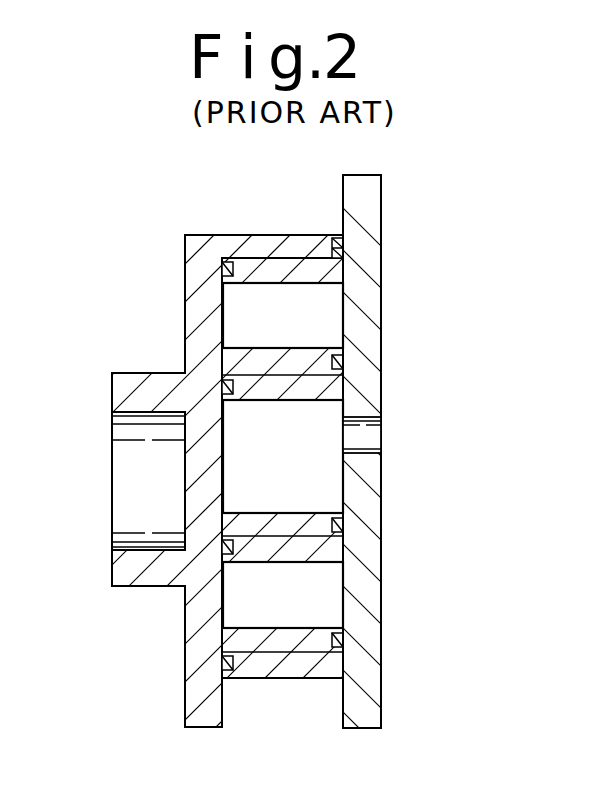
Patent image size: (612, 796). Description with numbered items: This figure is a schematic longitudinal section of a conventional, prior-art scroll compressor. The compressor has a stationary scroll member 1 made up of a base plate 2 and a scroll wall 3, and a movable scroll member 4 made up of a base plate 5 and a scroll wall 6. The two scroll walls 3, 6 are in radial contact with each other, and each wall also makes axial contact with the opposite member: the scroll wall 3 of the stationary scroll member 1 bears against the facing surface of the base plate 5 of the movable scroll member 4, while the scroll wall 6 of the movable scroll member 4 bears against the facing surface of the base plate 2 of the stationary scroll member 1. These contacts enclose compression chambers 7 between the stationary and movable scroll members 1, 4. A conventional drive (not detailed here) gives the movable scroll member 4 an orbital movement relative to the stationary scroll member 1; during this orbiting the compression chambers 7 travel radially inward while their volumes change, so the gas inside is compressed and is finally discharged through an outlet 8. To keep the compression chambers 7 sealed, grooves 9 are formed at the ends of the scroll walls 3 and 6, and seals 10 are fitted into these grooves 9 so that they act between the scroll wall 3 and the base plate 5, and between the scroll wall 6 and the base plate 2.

The stationary scroll member 1 is at (383, 300).
The base plate 2 is at (370, 355).
The scroll wall 3 is at (286, 270).
The movable scroll member 4 is at (184, 283).
The base plate 5 is at (190, 331).
The scroll wall 6 is at (246, 252).
The compression chambers 7 is at (291, 332).
The outlet 8 is at (368, 420).
The grooves 9 is at (333, 241).
The seals 10 is at (222, 268).